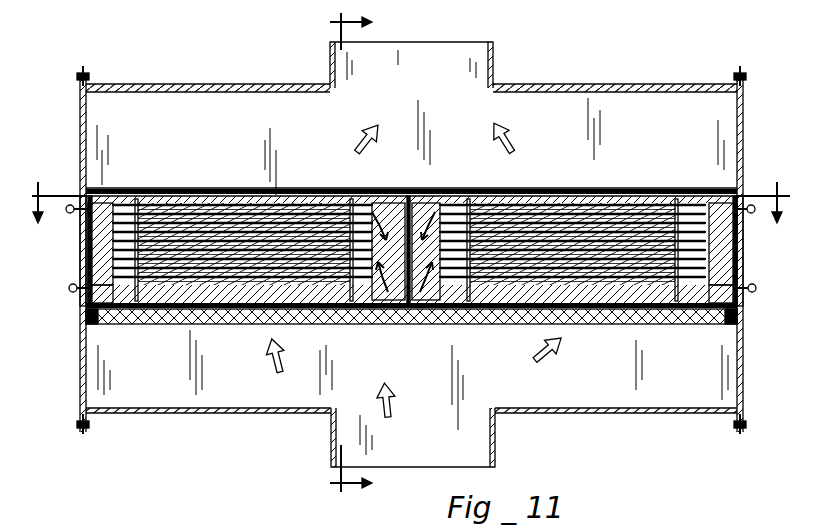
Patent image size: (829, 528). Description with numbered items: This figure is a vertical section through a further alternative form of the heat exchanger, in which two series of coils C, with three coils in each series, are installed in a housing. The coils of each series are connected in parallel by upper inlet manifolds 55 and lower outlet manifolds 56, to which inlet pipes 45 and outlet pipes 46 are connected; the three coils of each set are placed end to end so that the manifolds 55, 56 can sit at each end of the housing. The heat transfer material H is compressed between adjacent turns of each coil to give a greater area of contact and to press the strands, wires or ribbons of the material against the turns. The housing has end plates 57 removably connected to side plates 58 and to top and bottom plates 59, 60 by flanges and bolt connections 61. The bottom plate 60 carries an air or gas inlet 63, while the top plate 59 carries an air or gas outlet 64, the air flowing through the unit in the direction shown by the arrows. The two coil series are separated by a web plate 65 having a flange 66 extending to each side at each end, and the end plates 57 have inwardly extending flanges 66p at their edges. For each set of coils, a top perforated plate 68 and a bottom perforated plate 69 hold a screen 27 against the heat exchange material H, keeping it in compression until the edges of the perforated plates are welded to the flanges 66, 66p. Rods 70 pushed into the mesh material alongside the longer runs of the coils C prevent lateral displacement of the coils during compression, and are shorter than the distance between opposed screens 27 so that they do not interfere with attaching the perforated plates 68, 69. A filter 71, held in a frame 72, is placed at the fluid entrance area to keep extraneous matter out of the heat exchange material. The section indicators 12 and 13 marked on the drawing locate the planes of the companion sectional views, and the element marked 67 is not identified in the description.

The side plates 58 is at (193, 137).
The end plates 57 is at (80, 382).
The top plate 59 is at (212, 84).
The bottom plate 60 is at (607, 413).
The bolt connections 61 is at (90, 74).
The air or gas inlet 63 is at (497, 445).
The air or gas outlet 64 is at (495, 50).
The web plate 65 is at (416, 200).
The flange 66 is at (394, 200).
The inwardly extending flanges 66p is at (92, 192).
The end wall portion 67 is at (82, 275).
The top perforated plate 68 is at (264, 190).
The bottom perforated plate 69 is at (210, 324).
The rods 70 is at (176, 308).
The filter 71 is at (624, 308).
The frame 72 is at (96, 324).
The inlet pipes 45 is at (106, 196).
The outlet pipes 46 is at (132, 308).
The screen 27 is at (168, 196).
The upper inlet manifolds 55 is at (70, 214).
The lower outlet manifolds 56 is at (69, 294).
The coils C is at (236, 200).
The heat transfer material H is at (370, 188).
The section line 12 is at (368, 254).
The section line 13 is at (410, 219).